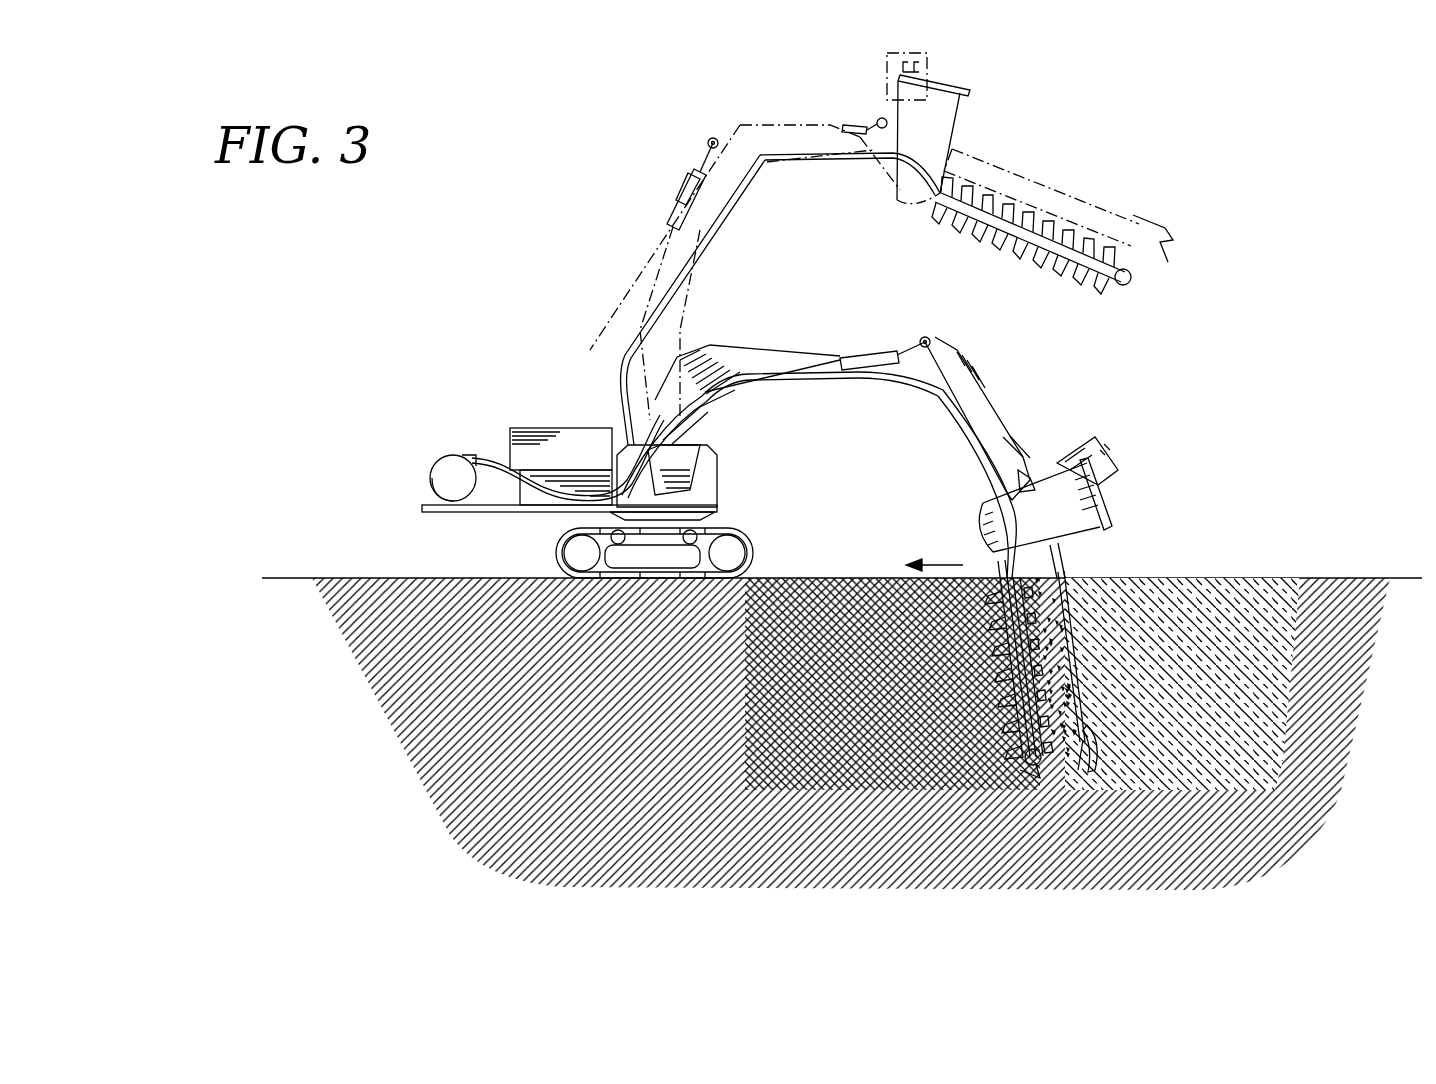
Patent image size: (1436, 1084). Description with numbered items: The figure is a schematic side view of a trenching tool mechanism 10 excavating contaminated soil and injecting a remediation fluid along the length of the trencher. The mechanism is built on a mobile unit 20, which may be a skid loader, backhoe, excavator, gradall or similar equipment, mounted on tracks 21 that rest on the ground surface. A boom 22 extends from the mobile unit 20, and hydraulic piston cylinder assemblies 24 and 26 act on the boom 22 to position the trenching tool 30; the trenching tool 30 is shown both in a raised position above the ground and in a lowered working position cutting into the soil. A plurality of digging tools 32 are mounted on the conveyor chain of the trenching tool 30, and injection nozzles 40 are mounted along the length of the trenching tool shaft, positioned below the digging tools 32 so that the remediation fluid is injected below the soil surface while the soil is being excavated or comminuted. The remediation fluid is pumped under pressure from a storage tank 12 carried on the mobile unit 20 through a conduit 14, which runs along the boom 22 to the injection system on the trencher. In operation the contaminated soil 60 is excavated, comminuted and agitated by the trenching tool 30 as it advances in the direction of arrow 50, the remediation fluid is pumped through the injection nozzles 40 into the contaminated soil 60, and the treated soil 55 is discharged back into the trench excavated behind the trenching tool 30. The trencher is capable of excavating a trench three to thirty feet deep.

The trenching tool mechanism 10 is at (634, 274).
The storage tank 12 is at (458, 462).
The conduit 14 is at (847, 388).
The mobile unit 20 is at (735, 462).
The tracks 21 is at (757, 542).
The boom 22 is at (761, 362).
The hydraulic piston cylinder assembly 24 is at (686, 200).
The hydraulic piston cylinder assembly 26 is at (862, 122).
The trenching tool 30 is at (1030, 199).
The digging tools 32 is at (1032, 280).
The injection nozzles 40 is at (1007, 243).
The arrow 50 is at (934, 550).
The treated soil 55 is at (1213, 620).
The contaminated soil 60 is at (844, 614).